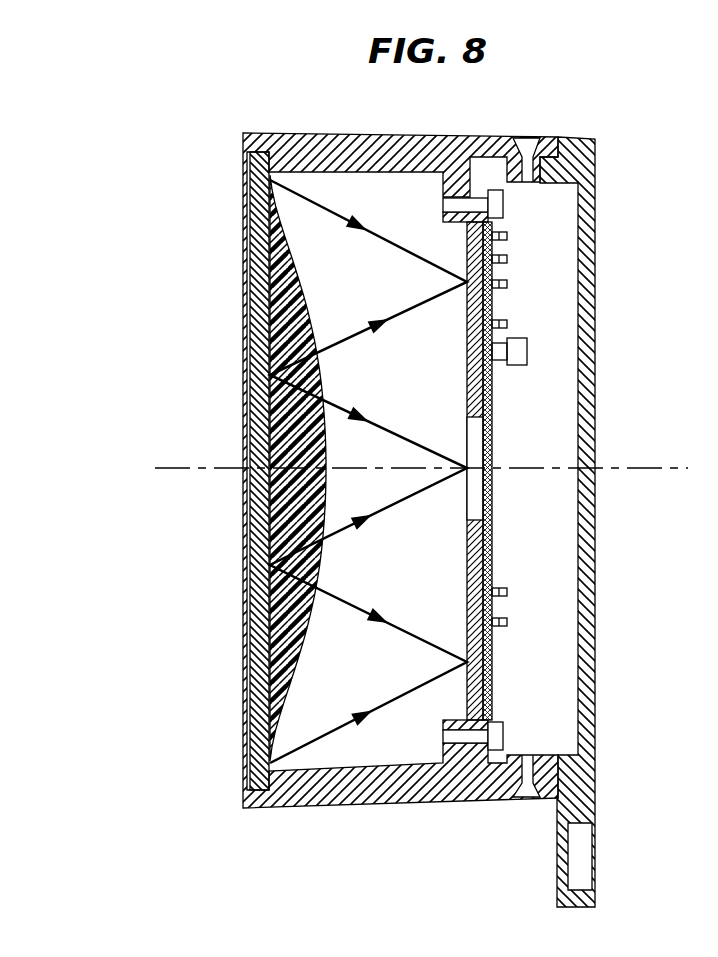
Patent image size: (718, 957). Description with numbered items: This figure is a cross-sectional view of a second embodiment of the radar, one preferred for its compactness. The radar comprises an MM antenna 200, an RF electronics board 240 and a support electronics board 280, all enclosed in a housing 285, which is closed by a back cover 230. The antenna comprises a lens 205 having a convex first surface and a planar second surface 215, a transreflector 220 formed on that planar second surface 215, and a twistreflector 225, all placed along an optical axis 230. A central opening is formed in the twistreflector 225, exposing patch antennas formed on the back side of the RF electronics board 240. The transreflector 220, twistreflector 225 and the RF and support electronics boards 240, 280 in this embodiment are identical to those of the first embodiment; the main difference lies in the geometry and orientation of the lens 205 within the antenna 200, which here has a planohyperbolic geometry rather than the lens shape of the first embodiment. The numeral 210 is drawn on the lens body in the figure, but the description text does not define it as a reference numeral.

The MM antenna 200 is at (455, 817).
The lens 205 is at (305, 560).
The lens body 210 is at (298, 677).
The planar second surface 215 is at (248, 297).
The transreflector 220 is at (248, 648).
The twistreflector 225 is at (467, 377).
The optical axis 230 is at (645, 468).
The RF electronics board 240 is at (492, 500).
The support electronics board 280 is at (495, 655).
The housing 285 is at (394, 134).